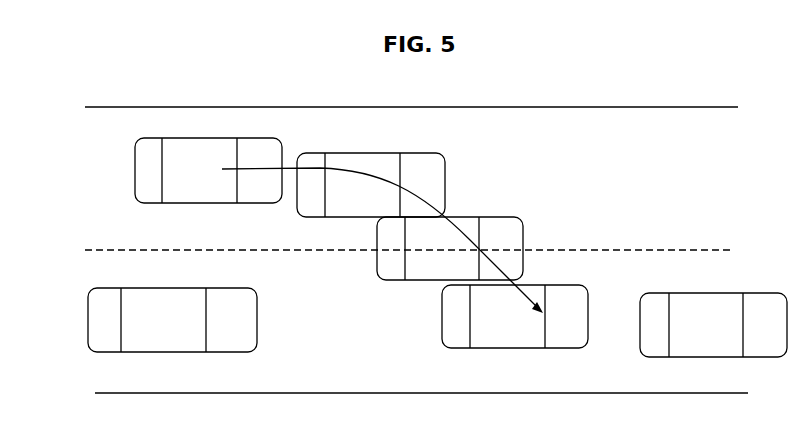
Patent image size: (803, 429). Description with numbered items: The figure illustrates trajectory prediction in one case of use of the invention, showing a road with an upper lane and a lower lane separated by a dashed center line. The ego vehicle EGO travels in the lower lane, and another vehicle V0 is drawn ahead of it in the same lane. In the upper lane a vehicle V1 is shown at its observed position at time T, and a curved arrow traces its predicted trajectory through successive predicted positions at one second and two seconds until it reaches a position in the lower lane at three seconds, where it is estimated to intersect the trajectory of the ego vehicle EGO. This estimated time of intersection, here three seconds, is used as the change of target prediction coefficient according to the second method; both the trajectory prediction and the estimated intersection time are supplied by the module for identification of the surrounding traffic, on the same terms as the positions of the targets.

The vehicle V1 is at (146, 138).
The vehicle V0 is at (713, 325).
The ego vehicle EGO is at (84, 339).
The time T is at (198, 172).